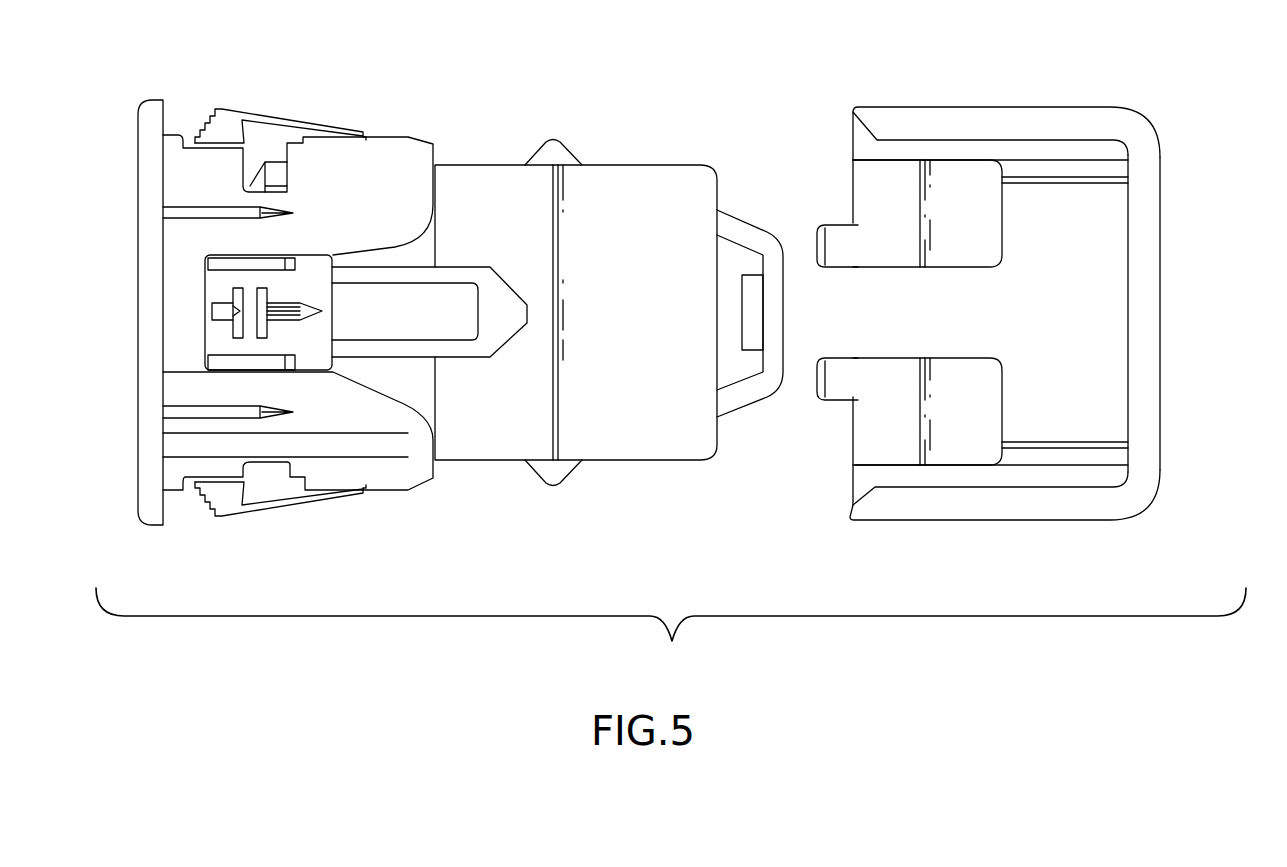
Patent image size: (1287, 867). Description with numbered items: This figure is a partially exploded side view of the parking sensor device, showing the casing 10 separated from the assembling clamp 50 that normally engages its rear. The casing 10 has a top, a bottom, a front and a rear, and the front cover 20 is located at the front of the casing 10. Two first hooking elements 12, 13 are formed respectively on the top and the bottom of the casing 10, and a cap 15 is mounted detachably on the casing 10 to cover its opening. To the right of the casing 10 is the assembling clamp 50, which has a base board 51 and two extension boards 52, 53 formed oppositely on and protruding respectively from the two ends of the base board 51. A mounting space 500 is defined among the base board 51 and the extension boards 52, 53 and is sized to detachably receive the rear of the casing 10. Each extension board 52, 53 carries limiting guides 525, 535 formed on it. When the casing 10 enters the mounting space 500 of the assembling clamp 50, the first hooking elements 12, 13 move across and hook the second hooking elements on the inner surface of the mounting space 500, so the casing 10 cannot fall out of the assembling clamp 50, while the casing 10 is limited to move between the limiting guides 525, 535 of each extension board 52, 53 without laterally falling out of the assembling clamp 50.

The casing 10 is at (480, 142).
The first hooking element 12 is at (557, 153).
The first hooking element 13 is at (557, 480).
The cap 15 is at (492, 448).
The front cover 20 is at (188, 102).
The assembling clamp 50 is at (1157, 98).
The base board 51 is at (1153, 303).
The extension board 52 is at (1017, 120).
The extension board 53 is at (1032, 517).
The mounting space 500 is at (957, 315).
The limiting guide 525 is at (990, 232).
The limiting guide 535 is at (903, 445).